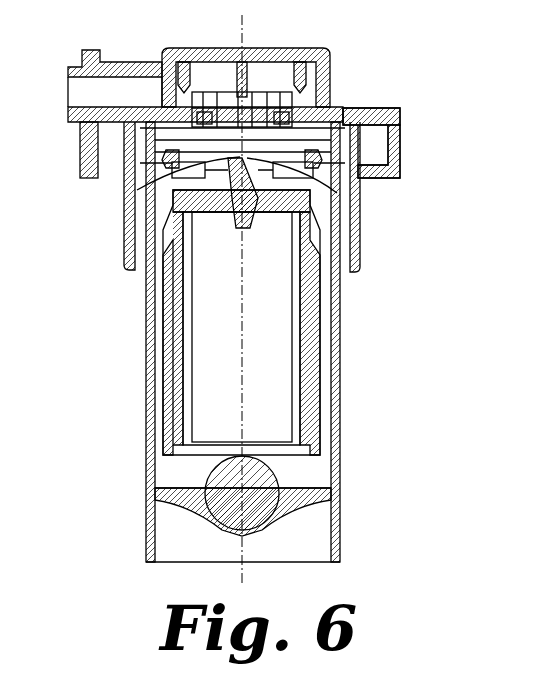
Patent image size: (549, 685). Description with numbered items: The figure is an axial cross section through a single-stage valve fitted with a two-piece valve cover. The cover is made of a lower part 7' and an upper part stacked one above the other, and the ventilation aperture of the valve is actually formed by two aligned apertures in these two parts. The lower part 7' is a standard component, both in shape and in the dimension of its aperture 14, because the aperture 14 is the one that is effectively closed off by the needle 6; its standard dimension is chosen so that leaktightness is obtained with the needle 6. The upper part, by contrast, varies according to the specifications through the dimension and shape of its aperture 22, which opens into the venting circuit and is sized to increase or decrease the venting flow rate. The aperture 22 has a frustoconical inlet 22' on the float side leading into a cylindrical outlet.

The frustoconical inlet 22' is at (312, 123).
The lower part of the valve cover 7' is at (394, 143).
The aperture in the upper part of the cover 22 is at (198, 161).
The aperture in the lower part of the cover 14 is at (160, 186).
The needle 6 is at (315, 193).